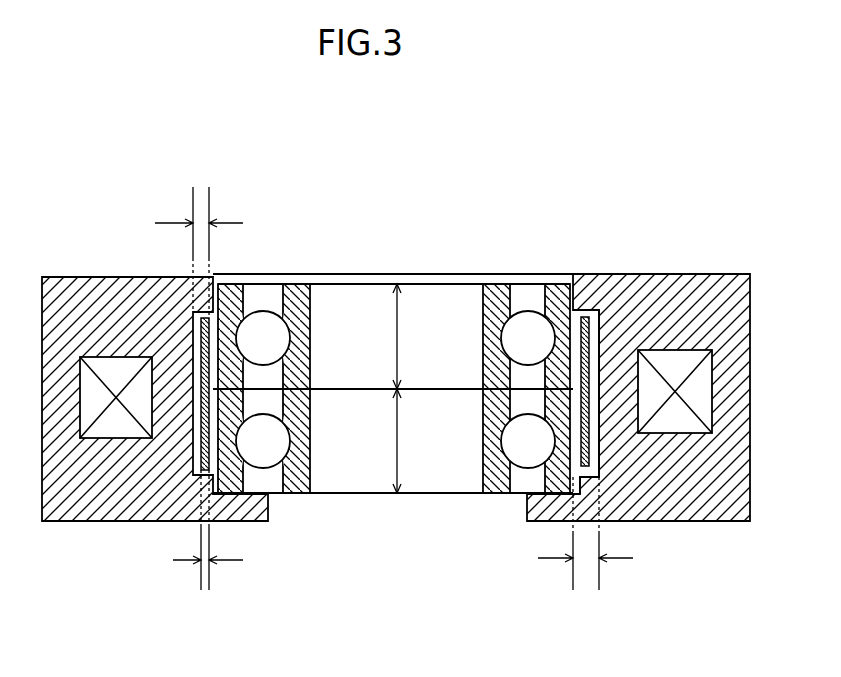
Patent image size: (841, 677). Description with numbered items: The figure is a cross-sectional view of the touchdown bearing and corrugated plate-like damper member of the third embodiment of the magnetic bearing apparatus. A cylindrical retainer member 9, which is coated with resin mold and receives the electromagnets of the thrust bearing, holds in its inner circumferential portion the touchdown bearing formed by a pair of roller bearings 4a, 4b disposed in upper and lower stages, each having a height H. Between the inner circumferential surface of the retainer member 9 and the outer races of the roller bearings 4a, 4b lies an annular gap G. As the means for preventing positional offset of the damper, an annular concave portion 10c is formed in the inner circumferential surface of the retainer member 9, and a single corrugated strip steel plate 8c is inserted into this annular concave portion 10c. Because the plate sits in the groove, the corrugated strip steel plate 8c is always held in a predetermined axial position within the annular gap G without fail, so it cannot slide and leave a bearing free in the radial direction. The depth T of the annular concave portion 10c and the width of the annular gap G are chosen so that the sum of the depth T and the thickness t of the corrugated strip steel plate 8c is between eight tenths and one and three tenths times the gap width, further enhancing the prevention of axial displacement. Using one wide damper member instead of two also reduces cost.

The first rotary bearing 4a is at (262, 323).
The roller bearing 4b is at (262, 441).
The corrugated strip steel plate 8c is at (585, 420).
The cylindrical retainer member 9 is at (718, 302).
The annular concave portion 10c is at (592, 317).
The annular gap G is at (573, 290).
The depth of the annular concave portion T is at (199, 241).
The thickness of the corrugated strip steel plate t is at (208, 546).
The height of the roller bearing H is at (408, 388).